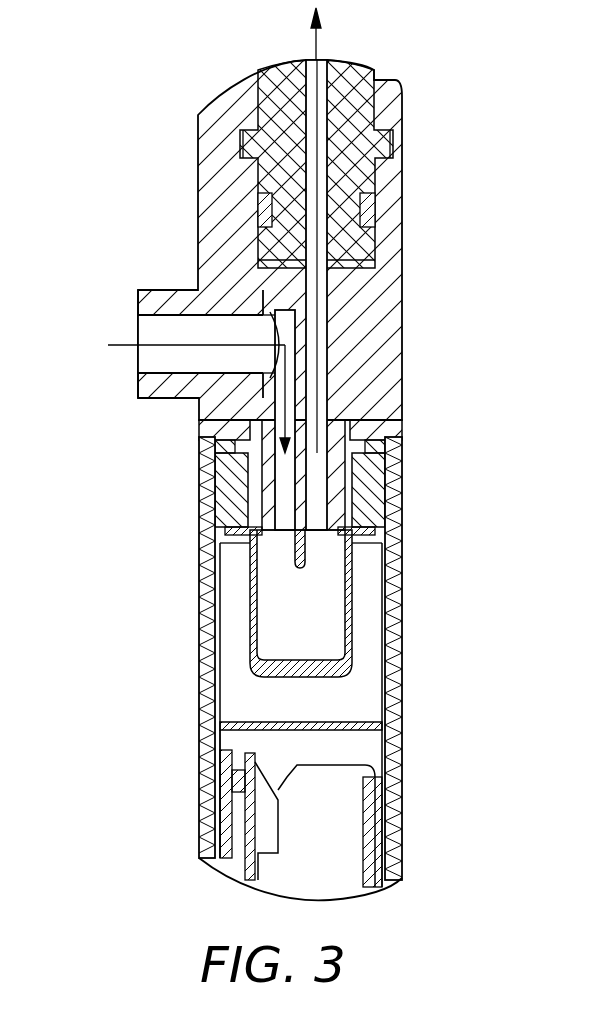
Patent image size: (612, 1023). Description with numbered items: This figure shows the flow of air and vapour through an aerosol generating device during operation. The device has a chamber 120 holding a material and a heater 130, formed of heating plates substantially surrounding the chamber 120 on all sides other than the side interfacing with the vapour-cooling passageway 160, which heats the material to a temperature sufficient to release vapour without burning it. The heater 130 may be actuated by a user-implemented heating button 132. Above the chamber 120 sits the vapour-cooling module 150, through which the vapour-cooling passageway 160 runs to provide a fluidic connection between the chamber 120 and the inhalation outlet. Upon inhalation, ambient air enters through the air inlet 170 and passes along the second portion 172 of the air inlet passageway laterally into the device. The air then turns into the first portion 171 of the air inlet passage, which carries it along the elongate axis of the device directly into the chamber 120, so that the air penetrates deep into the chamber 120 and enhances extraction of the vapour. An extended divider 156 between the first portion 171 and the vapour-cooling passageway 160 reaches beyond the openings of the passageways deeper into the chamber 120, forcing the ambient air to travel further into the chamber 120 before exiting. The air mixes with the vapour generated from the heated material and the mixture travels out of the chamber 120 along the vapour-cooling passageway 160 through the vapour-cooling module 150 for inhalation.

The vapour-cooling module 150 is at (418, 207).
The vapour-cooling passageway 160 is at (324, 320).
The second portion of the air inlet passageway 172 is at (146, 331).
The air inlet 170 is at (111, 362).
The first portion of the air inlet passage 171 is at (240, 452).
The extended divider 156 is at (305, 549).
The chamber 120 is at (322, 628).
The heater 130 is at (360, 692).
The heating button 132 is at (203, 846).